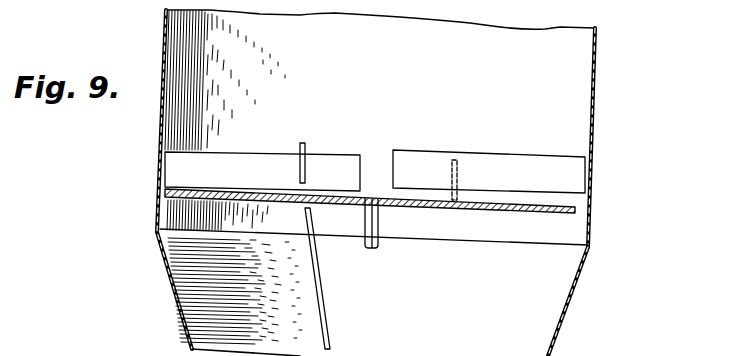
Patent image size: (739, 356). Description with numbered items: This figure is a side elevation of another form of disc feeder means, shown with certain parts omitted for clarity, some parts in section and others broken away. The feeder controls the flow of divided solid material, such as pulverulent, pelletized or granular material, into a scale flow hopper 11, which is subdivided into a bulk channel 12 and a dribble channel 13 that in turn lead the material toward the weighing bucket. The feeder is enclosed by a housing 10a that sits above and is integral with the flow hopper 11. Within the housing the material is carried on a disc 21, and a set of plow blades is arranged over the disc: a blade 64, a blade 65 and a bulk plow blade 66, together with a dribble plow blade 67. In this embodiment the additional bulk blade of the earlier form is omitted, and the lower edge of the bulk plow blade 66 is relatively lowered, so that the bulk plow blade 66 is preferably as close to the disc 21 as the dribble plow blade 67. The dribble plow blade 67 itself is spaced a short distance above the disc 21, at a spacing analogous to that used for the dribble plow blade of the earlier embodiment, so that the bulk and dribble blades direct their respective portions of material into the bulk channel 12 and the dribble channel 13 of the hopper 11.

The housing 10a is at (166, 32).
The scale flow hopper 11 is at (622, 280).
The bulk channel 12 is at (540, 326).
The dribble channel 13 is at (175, 259).
The disc 21 is at (503, 210).
The blade 64 is at (305, 145).
The blade 65 is at (452, 170).
The bulk plow blade 66 is at (493, 152).
The dribble plow blade 67 is at (243, 152).